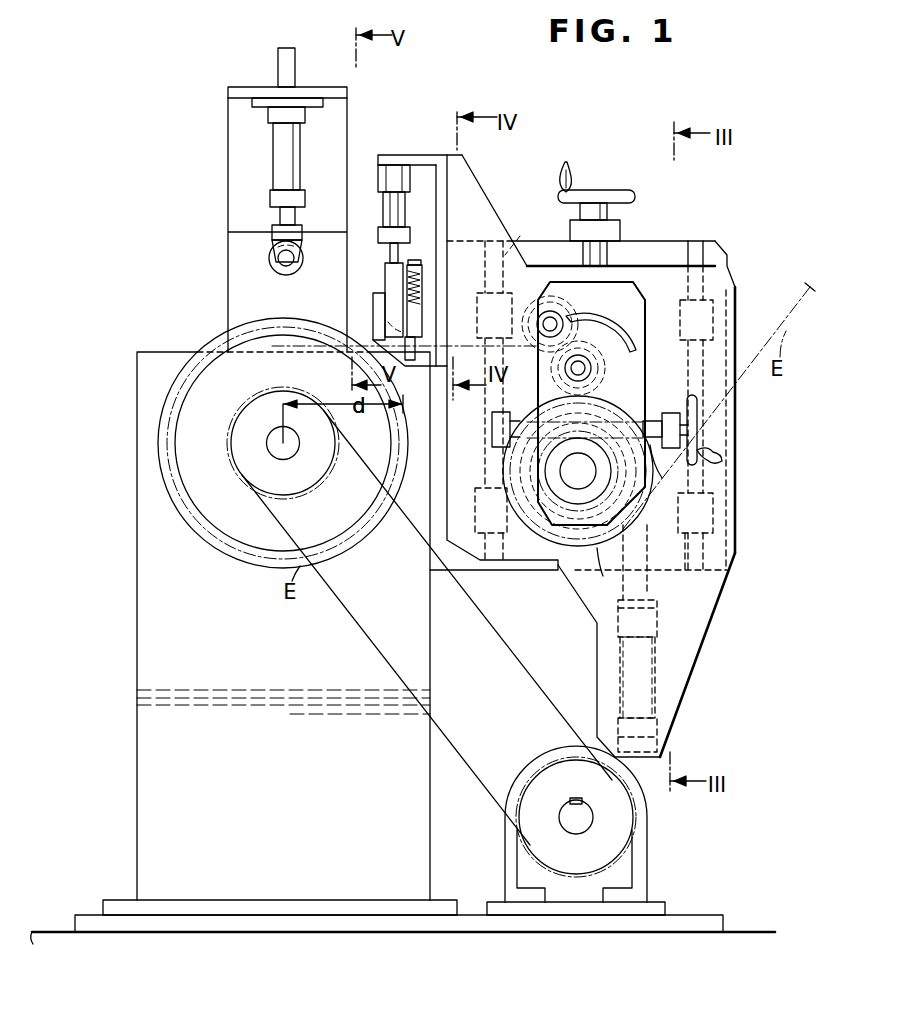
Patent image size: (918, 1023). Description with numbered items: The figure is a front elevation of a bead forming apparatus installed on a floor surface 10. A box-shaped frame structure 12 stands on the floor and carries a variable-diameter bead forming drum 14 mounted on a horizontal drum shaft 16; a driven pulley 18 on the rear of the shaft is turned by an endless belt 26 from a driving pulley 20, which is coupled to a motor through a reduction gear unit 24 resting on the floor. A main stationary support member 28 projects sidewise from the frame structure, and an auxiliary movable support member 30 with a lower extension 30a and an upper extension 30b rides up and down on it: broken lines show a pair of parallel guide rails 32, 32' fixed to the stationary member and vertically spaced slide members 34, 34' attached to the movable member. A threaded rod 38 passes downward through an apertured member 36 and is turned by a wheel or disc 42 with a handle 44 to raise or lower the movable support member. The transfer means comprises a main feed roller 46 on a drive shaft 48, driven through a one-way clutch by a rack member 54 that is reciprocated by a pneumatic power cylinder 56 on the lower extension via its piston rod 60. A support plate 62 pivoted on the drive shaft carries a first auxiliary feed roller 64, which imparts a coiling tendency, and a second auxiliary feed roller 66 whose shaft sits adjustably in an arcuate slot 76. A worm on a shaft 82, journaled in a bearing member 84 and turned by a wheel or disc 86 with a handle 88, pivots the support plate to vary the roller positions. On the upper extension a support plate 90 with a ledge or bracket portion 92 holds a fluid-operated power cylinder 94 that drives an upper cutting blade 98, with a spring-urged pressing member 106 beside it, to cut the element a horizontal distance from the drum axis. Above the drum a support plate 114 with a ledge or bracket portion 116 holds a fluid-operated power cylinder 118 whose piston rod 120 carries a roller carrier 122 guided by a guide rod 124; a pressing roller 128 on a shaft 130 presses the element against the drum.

The floor surface 10 is at (747, 932).
The frame structure 12 is at (135, 715).
The bead forming drum 14 is at (228, 558).
The drum shaft 16 is at (291, 457).
The driven pulley 18 is at (236, 477).
The driving pulley 20 is at (640, 818).
The reduction gear unit 24 is at (505, 860).
The endless belt 26 is at (364, 640).
The main stationary support member 28 is at (670, 240).
The auxiliary movable support member 30 is at (737, 562).
The lower extension 30a is at (682, 702).
The upper extension 30b is at (488, 204).
The guide rail 32 is at (715, 255).
The guide rail 32' is at (512, 253).
The slide members 34 is at (720, 419).
The slide members 34' is at (494, 414).
The apertured member 36 is at (620, 232).
The threaded rod 38 is at (583, 259).
The wheel or disc 42 is at (605, 190).
The handle 44 is at (567, 162).
The main feed roller 46 is at (606, 574).
The drive shaft 48 is at (567, 482).
The rack member 54 is at (649, 523).
The pneumatic power cylinder 56 is at (657, 655).
The piston rod 60 is at (649, 590).
The support plate 62 is at (640, 298).
The first auxiliary feed roller 64 is at (630, 366).
The second auxiliary feed roller 66 is at (540, 312).
The arcuate slot 76 is at (595, 318).
The shaft 82 is at (667, 470).
The bearing member 84 is at (497, 447).
The wheel or disc 86 is at (699, 442).
The handle 88 is at (721, 462).
The support plate 90 is at (447, 232).
The ledge or bracket portion 92 is at (400, 155).
The fluid-operated power cylinder 94 is at (384, 212).
The upper cutting blade 98 is at (385, 283).
The pressing member 106 is at (417, 354).
The support plate 114 is at (228, 133).
The ledge or bracket portion 116 is at (249, 85).
The fluid-operated power cylinder 118 is at (273, 161).
The piston rod 120 is at (302, 213).
The roller carrier 122 is at (271, 227).
The guide rod 124 is at (295, 56).
The pressing roller 128 is at (292, 275).
The shaft 130 is at (277, 259).